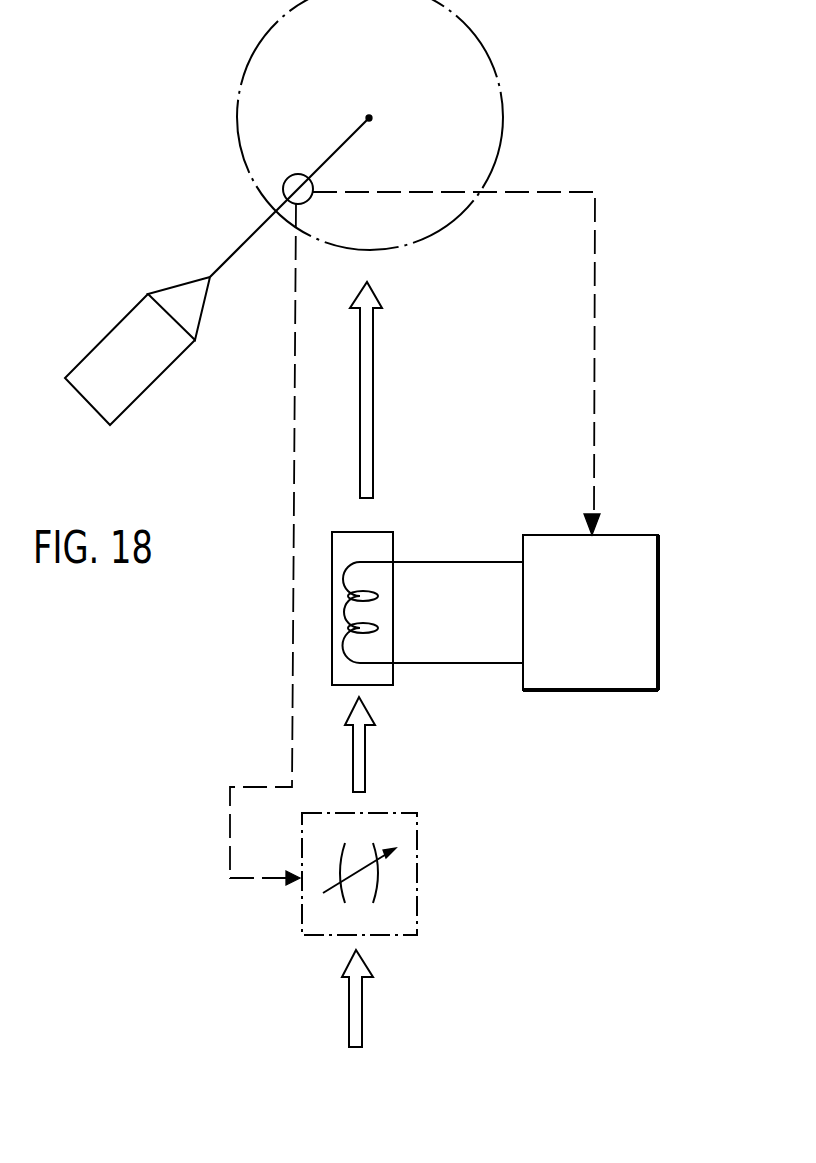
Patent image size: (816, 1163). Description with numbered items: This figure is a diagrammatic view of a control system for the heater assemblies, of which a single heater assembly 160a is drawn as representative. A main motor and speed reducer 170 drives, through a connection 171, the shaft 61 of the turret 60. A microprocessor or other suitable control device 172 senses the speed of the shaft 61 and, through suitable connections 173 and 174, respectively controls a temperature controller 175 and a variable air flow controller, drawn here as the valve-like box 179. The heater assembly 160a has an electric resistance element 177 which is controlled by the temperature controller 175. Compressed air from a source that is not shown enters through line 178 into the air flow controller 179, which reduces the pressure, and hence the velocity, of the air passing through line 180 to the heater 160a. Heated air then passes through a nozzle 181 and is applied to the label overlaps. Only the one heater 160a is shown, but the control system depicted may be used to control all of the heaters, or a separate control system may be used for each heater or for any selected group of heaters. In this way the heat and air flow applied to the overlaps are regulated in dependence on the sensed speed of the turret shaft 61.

The turret 60 is at (434, 101).
The shaft 61 is at (367, 116).
The main motor and speed reducer 170 is at (162, 358).
The connection 171 is at (250, 233).
The microprocessor or control device 172 is at (283, 185).
The connection 173 is at (517, 192).
The connection 174 is at (288, 716).
The temperature controller 175 is at (624, 535).
The electric resistance element 177 is at (380, 628).
The heater assembly 160a is at (393, 597).
The line 178 is at (362, 1012).
The valve 179 is at (410, 813).
The line 180 is at (365, 758).
The nozzle 181 is at (373, 396).